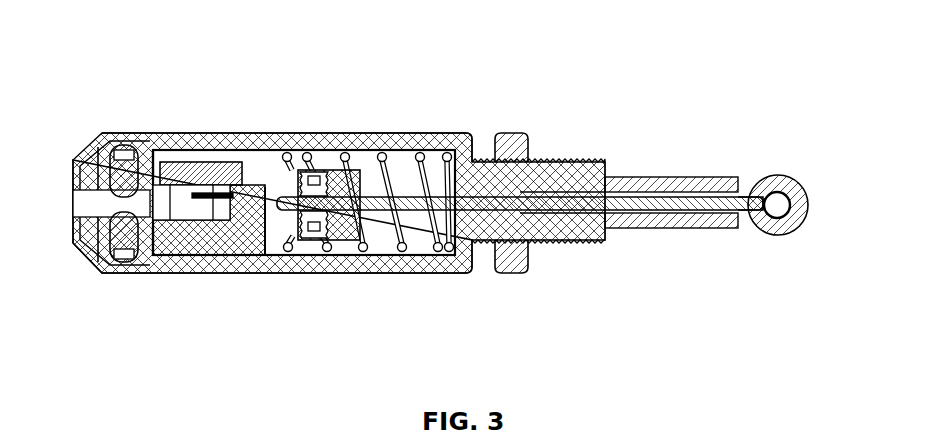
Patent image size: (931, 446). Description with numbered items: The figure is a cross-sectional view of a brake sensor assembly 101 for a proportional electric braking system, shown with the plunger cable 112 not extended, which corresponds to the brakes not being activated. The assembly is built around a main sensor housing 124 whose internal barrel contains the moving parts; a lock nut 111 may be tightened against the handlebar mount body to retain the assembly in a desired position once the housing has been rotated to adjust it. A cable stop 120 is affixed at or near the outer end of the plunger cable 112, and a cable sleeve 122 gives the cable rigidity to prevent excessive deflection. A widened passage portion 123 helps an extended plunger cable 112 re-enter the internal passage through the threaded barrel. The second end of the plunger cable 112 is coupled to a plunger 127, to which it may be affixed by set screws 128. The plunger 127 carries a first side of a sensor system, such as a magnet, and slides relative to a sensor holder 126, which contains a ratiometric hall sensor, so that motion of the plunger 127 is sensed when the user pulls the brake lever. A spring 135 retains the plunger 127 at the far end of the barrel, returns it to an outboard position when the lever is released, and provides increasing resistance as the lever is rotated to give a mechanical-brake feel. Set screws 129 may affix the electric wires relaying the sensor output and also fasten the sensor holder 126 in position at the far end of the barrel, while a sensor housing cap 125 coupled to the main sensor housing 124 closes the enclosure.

The brake sensor assembly 101 is at (300, 128).
The lock nut 111 is at (508, 132).
The plunger cable 112 is at (742, 210).
The cable stop 120 is at (782, 175).
The cable sleeve 122 is at (673, 177).
The widened passage portion 123 is at (607, 213).
The main sensor housing 124 is at (245, 275).
The sensor housing cap 125 is at (150, 275).
The sensor holder 126 is at (207, 245).
The plunger 127 is at (248, 148).
The set screws 128 is at (320, 150).
The set screws 129 is at (122, 140).
The spring 135 is at (416, 243).